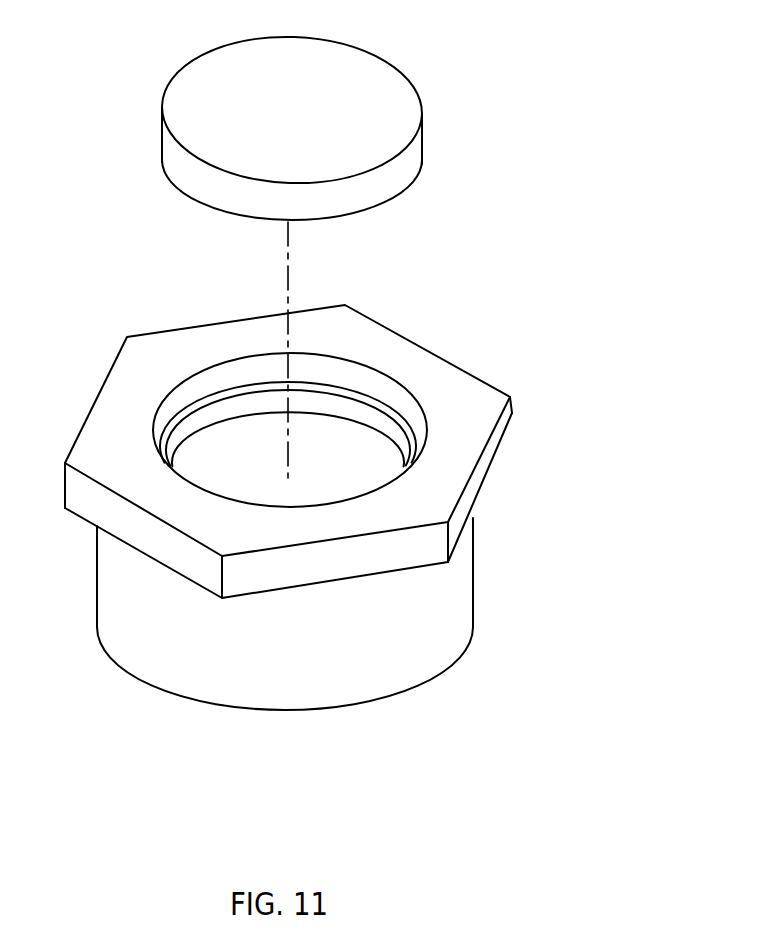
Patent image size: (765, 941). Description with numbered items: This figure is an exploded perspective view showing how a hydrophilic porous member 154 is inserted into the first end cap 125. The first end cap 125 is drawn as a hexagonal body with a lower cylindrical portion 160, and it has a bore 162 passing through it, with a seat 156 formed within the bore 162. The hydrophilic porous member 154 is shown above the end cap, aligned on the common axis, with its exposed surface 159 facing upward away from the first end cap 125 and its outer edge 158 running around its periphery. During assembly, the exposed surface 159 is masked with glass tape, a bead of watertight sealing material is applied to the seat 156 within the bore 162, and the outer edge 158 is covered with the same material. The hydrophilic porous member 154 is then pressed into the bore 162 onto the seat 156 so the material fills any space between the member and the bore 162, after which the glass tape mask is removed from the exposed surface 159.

The first end cap 125 is at (327, 501).
The hydrophilic porous member 154 is at (330, 121).
The seat 156 is at (368, 398).
The outer edge 158 is at (400, 168).
The exposed surface 159 is at (207, 96).
The cylindrical body 160 is at (152, 650).
The bore 162 is at (203, 384).